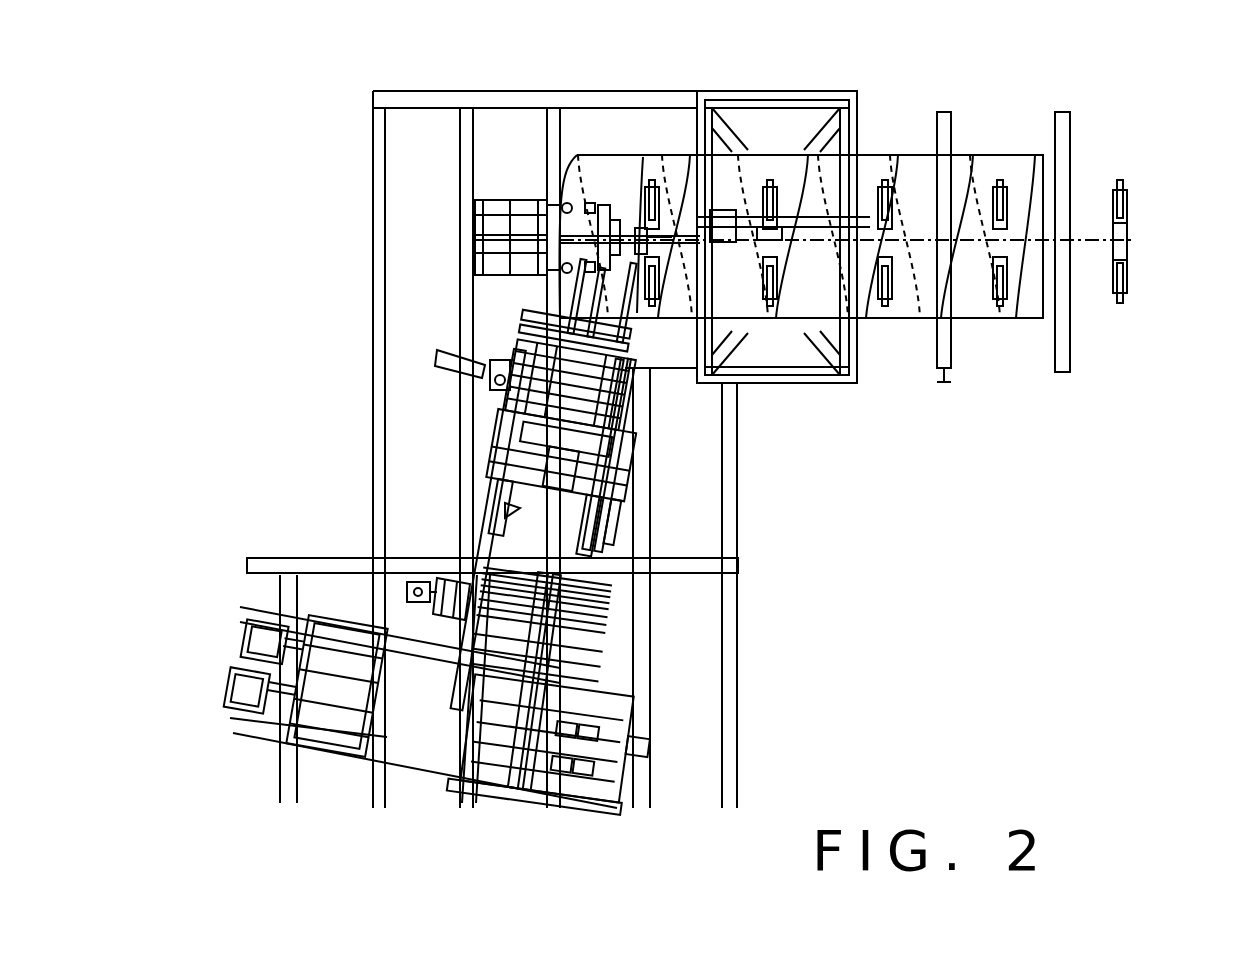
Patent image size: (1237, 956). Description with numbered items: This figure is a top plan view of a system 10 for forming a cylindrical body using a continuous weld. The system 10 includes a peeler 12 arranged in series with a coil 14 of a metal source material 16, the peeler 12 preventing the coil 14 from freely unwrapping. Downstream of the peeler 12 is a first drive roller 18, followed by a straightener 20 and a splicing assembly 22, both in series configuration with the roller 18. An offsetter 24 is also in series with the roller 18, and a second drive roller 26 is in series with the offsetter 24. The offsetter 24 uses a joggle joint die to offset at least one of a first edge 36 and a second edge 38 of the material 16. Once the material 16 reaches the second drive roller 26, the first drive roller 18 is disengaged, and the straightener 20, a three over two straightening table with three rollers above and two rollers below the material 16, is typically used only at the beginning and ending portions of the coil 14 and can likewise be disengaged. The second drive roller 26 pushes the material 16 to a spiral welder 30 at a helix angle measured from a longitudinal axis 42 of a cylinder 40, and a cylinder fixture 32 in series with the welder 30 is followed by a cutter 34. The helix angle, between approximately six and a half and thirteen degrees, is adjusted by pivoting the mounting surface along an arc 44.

The system 10 is at (915, 576).
The peeler 12 is at (633, 644).
The coil 14 is at (488, 786).
The metal source material 16 is at (527, 765).
The first drive roller 18 is at (637, 611).
The straightener 20 is at (640, 590).
The splicing assembly 22 is at (672, 495).
The offsetter 24 is at (620, 428).
The second drive roller 26 is at (617, 396).
The spiral welder 30 is at (650, 135).
The cylinder fixture 32 is at (1176, 283).
The cutter 34 is at (794, 258).
The first edge 36 is at (674, 302).
The second edge 38 is at (715, 190).
The cylinder 40 is at (998, 130).
The longitudinal axis 42 is at (1097, 240).
The arc 44 is at (658, 561).